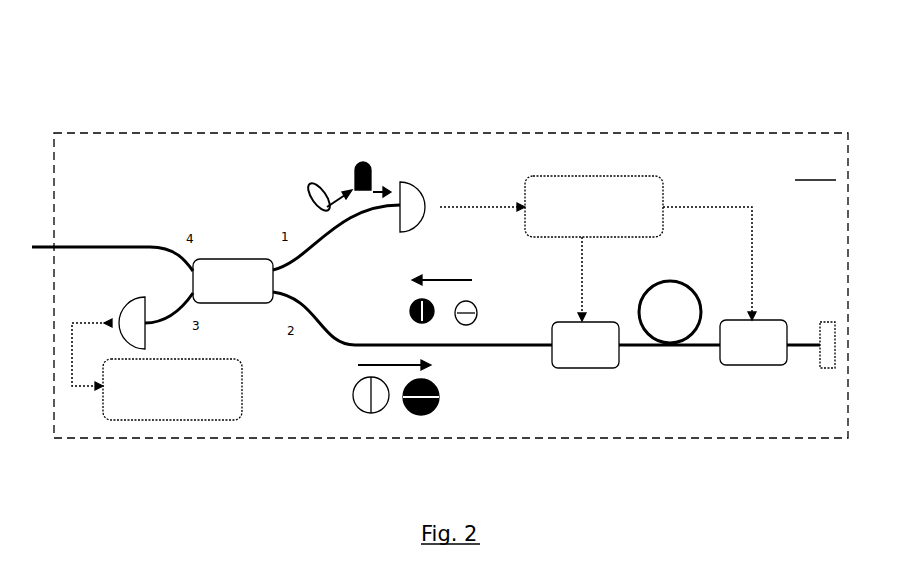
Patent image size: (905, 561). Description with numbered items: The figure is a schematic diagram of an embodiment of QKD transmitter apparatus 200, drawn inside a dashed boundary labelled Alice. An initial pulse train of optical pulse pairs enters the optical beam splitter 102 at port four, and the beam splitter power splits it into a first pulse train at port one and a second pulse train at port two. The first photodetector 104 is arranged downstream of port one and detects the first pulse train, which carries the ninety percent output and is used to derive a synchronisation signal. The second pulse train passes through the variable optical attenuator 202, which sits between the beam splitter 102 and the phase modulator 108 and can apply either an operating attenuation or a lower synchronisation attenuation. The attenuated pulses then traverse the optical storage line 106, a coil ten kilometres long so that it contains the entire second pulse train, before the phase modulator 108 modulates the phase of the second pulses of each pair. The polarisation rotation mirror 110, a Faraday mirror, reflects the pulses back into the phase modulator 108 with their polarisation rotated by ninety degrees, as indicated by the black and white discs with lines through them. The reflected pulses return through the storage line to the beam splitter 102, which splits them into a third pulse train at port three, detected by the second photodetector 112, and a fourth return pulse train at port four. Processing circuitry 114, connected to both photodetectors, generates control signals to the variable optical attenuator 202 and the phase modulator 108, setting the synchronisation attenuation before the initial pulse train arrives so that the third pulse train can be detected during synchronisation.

The QKD transmitter apparatus 200 is at (190, 93).
The optical beam splitter 102 is at (219, 266).
The first photodetector 104 is at (423, 206).
The optical storage line 106 is at (684, 283).
The optical phase modulator 108 is at (733, 352).
The polarisation rotation mirror 110 is at (825, 356).
The second photodetector 112 is at (127, 318).
The processing circuitry 114 is at (637, 202).
The variable optical attenuator 202 is at (580, 356).